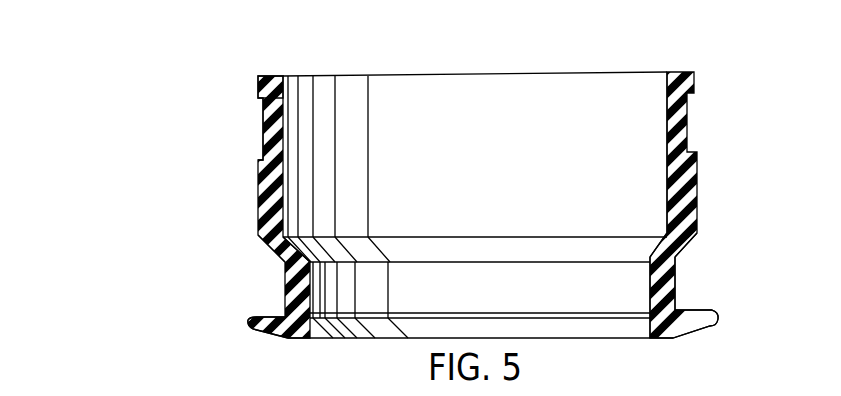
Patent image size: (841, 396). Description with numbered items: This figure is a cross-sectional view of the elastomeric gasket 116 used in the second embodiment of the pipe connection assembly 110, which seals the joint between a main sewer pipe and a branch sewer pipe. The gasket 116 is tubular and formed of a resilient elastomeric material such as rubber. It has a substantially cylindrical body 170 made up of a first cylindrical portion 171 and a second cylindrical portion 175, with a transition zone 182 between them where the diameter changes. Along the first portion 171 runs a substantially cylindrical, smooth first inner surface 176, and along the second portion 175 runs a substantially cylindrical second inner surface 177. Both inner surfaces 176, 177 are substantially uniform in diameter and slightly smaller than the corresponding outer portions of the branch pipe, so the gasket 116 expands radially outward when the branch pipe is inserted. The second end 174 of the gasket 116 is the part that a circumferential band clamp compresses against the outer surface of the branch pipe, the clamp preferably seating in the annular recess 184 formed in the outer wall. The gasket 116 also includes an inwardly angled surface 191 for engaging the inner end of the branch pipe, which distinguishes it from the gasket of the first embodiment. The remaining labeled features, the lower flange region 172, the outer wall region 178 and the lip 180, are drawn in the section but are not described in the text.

The pipe connection assembly 110 is at (145, 262).
The elastomeric gasket 116 is at (256, 180).
The cylindrical body 170 is at (256, 240).
The first cylindrical portion 171 is at (665, 148).
The lower flange 172 is at (262, 338).
The second end 174 is at (252, 77).
The second cylindrical portion 175 is at (647, 292).
The first inner surface 176 is at (288, 188).
The second inner surface 177 is at (310, 285).
The side wall 178 is at (260, 205).
The flange lip 180 is at (691, 339).
The transition zone 182 is at (700, 243).
The annular recess 184 is at (689, 118).
The inwardly angled surface 191 is at (313, 342).